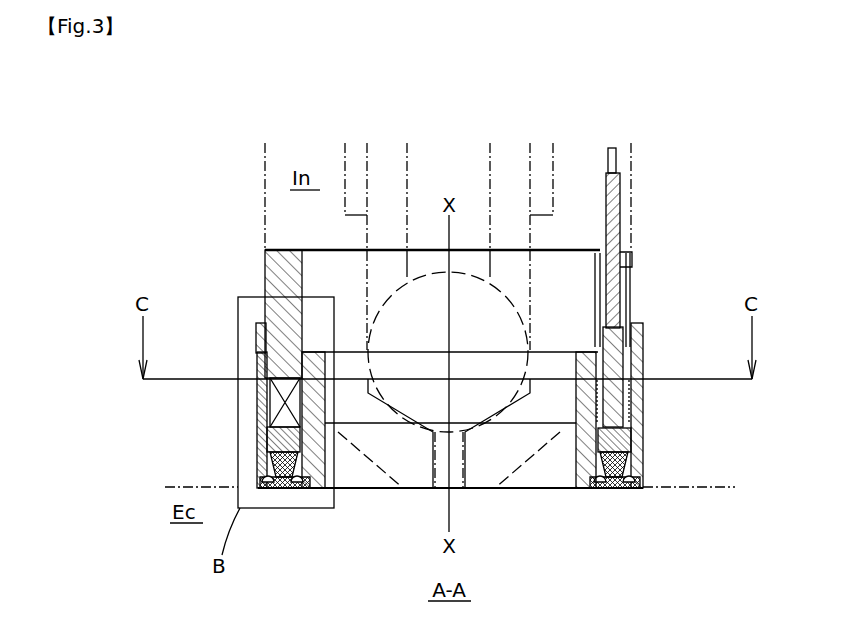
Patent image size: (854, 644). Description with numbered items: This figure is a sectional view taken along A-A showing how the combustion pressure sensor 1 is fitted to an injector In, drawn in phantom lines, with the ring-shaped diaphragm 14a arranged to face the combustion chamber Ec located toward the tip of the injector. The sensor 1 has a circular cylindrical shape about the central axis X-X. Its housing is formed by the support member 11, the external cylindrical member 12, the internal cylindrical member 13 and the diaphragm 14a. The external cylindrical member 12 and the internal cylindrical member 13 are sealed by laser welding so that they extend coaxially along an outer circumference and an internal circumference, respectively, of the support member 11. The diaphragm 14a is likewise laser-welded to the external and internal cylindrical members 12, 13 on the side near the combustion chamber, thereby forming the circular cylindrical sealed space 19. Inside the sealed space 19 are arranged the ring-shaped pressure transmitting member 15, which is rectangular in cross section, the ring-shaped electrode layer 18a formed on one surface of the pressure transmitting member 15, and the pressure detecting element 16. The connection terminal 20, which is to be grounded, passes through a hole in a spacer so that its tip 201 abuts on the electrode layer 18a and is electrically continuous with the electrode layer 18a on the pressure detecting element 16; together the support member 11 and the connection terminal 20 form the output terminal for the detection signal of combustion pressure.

The combustion pressure sensor 1 is at (228, 235).
The support member 11 is at (266, 283).
The external cylindrical member 12 is at (258, 358).
The internal cylindrical member 13 is at (318, 468).
The diaphragm 14a is at (283, 488).
The pressure transmitting member 15 is at (275, 442).
The pressure detecting element 16 is at (300, 400).
The electrode layer 18a is at (268, 427).
The circular cylindrical sealed space 19 is at (260, 390).
The connection terminal 20 is at (613, 202).
The tip 201 is at (645, 403).